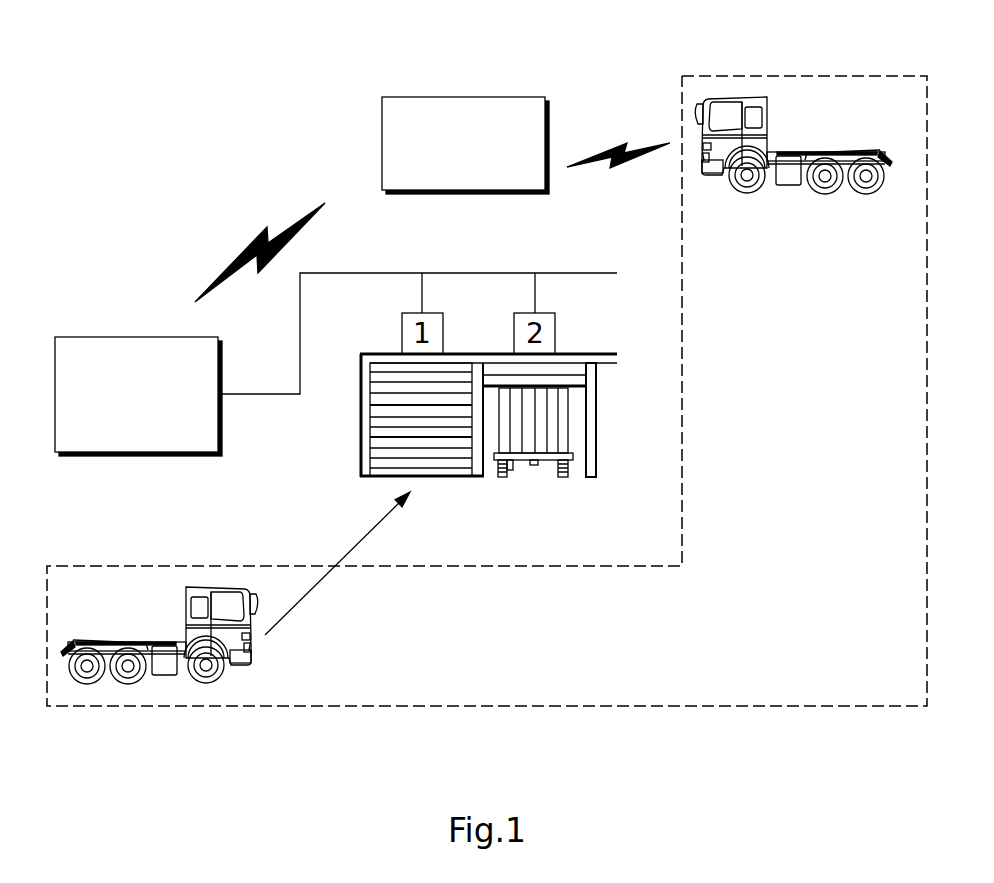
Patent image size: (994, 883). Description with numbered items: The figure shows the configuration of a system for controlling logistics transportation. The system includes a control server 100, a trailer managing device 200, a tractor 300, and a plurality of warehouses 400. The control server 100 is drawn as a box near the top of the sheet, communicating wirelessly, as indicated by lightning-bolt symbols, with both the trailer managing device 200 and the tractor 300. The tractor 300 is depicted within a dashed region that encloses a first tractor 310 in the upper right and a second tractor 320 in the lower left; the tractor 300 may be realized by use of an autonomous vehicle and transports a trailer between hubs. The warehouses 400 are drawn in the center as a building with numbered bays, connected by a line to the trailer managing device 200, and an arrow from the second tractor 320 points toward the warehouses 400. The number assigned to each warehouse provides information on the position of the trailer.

The control server 100 is at (463, 97).
The trailer managing device 200 is at (136, 337).
The tractor 300 is at (800, 76).
The first tractor 310 is at (736, 97).
The second tractor 320 is at (212, 587).
The warehouses 400 is at (360, 455).